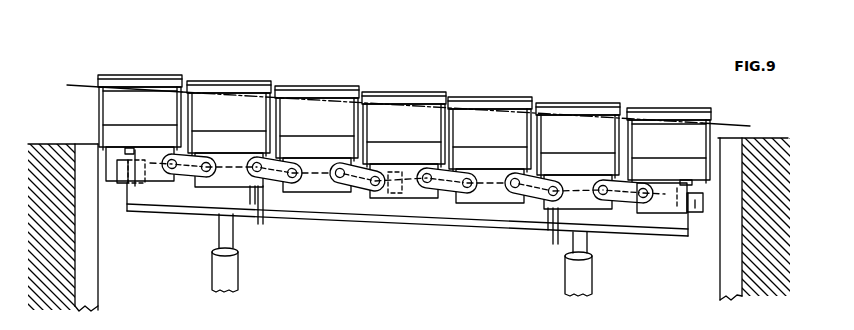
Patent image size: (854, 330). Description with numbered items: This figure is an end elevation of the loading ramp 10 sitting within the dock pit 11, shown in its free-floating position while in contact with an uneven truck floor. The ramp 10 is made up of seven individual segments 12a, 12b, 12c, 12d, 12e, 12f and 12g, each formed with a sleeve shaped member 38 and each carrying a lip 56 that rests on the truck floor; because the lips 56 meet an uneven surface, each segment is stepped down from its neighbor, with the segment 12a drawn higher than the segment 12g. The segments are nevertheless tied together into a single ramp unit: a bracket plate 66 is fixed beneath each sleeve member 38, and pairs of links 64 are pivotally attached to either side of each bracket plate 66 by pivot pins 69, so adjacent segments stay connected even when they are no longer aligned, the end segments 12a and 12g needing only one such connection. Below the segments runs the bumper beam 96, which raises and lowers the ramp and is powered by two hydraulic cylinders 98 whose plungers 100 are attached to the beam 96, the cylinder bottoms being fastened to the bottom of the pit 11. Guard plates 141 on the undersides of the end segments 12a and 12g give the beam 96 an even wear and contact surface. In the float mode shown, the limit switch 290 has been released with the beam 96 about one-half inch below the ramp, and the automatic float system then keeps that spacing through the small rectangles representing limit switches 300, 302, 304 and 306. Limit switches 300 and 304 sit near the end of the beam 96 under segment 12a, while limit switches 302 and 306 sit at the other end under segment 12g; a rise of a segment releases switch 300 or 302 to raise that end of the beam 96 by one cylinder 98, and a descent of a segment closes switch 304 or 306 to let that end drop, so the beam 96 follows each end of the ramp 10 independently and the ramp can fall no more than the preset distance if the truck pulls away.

The loading ramp 10 is at (415, 65).
The dock pit 11 is at (409, 286).
The segment 12a is at (161, 75).
The segment 12b is at (242, 82).
The segment 12c is at (331, 87).
The segment 12d is at (409, 92).
The segment 12e is at (507, 97).
The segment 12f is at (588, 103).
The segment 12g is at (677, 108).
The sleeve shaped member 38 is at (217, 123).
The lip 56 is at (164, 89).
The link 64 is at (563, 192).
The bracket plate 66 is at (425, 192).
The pivot pin 69 is at (209, 165).
The bumper beam 96 is at (393, 222).
The hydraulic cylinder 98 is at (217, 269).
The plunger 100 is at (233, 237).
The guard plate 141 is at (131, 149).
The limit switch 290 is at (401, 192).
The limit switch 300 is at (138, 183).
The limit switch 302 is at (680, 209).
The limit switch 304 is at (119, 184).
The limit switch 306 is at (693, 213).